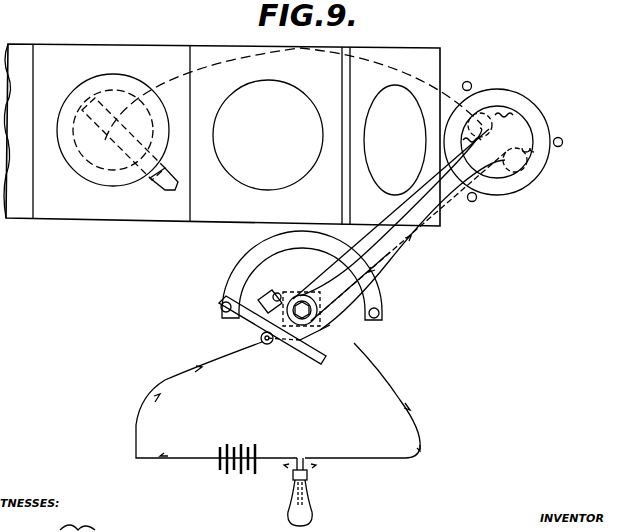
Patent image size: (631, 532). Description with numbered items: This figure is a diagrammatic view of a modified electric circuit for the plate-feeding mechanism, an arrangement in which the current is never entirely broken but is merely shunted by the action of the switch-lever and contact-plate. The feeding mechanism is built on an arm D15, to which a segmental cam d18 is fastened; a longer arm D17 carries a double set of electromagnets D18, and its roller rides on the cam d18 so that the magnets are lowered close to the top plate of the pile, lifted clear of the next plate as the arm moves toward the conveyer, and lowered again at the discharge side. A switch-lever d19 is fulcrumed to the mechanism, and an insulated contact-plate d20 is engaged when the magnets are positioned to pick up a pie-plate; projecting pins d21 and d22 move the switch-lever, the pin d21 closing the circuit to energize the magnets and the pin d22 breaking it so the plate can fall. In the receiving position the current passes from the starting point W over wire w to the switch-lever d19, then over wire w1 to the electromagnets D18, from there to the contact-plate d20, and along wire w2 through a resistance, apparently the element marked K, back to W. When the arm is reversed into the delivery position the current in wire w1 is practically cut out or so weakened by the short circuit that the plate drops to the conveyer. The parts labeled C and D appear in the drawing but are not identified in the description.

The rotating disk with slot C is at (121, 44).
The contact wheel D is at (557, 120).
The arm D15 is at (382, 333).
The arm D17 is at (420, 208).
The electromagnets D18 is at (488, 118).
The segmental cam d18 is at (380, 290).
The switch-lever d19 is at (262, 340).
The insulated contact-plate d20 is at (262, 299).
The projecting pin d21 is at (222, 306).
The projecting pin d22 is at (380, 314).
The wire w is at (175, 380).
The wire w1 is at (404, 264).
The wire w2 is at (390, 376).
The starting-point W is at (230, 446).
The lamp K is at (308, 502).